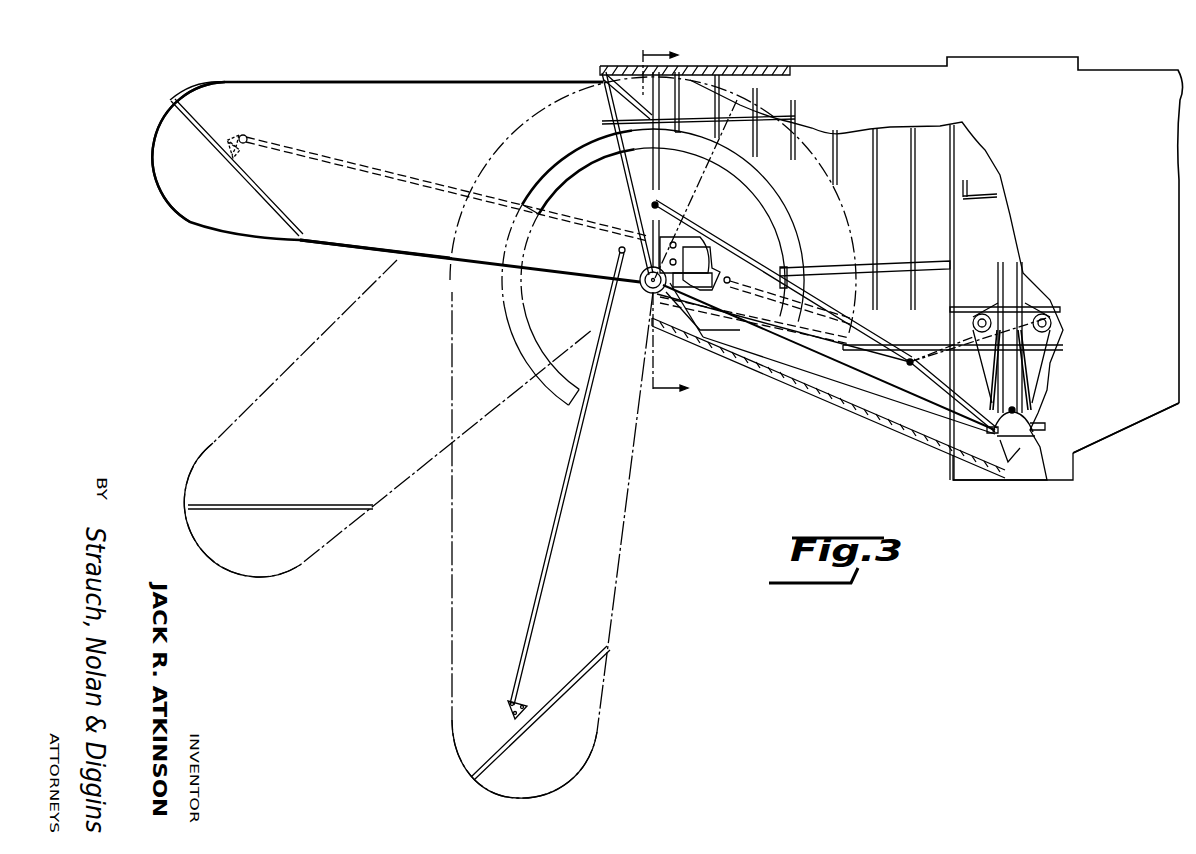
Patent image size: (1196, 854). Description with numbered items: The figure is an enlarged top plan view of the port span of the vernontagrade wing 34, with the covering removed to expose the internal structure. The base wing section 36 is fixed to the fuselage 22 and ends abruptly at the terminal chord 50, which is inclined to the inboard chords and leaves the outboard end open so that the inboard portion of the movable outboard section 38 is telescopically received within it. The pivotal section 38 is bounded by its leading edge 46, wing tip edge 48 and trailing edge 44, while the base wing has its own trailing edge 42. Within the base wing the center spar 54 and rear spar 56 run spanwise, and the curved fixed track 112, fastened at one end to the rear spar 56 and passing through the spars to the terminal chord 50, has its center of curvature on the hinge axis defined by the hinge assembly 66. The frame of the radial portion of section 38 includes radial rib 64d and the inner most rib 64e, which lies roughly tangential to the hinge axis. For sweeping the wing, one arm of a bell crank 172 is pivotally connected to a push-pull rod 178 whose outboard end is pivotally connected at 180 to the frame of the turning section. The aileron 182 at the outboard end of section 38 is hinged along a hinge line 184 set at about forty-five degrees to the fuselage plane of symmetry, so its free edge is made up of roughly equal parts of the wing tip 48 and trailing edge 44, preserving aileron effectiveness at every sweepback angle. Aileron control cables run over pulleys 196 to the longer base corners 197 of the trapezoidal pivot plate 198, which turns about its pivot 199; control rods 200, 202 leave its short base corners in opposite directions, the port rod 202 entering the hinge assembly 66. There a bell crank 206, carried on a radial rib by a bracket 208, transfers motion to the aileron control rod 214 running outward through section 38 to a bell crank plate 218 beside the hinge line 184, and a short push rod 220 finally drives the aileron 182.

The fuselage 22 is at (1052, 470).
The wing 34 is at (1175, 422).
The base wing section 36 is at (891, 268).
The movable outboard section 38 is at (670, 485).
The base wing trailing edge 42 is at (898, 440).
The trailing edge 44 is at (335, 248).
The leading edge 46 is at (395, 82).
The wing tip edge 48 is at (148, 170).
The terminal chord 50 is at (608, 111).
The center spar 54 is at (889, 268).
The rear spar 56 is at (900, 344).
The rib 64d is at (704, 268).
The inner most rib 64e is at (703, 317).
The hinge assembly 66 is at (645, 290).
The fixed track 112 is at (543, 166).
The bell crank 172 is at (980, 340).
The push-pull rod 178 is at (662, 205).
The pivotal connection 180 is at (738, 272).
The aileron 182 is at (152, 157).
The hinge line 184 is at (243, 186).
The pulley 196 is at (1025, 300).
The longer base corner 197 is at (990, 405).
The pivot plate 198 is at (1003, 460).
The pivot 199 is at (990, 430).
The control rod 200 is at (1043, 426).
The control rod 202 is at (802, 342).
The bell crank 206 is at (697, 240).
The bracket 208 is at (707, 258).
The aileron control rod 214 is at (410, 178).
The bell crank plate 218 is at (242, 133).
The push rod 220 is at (238, 156).